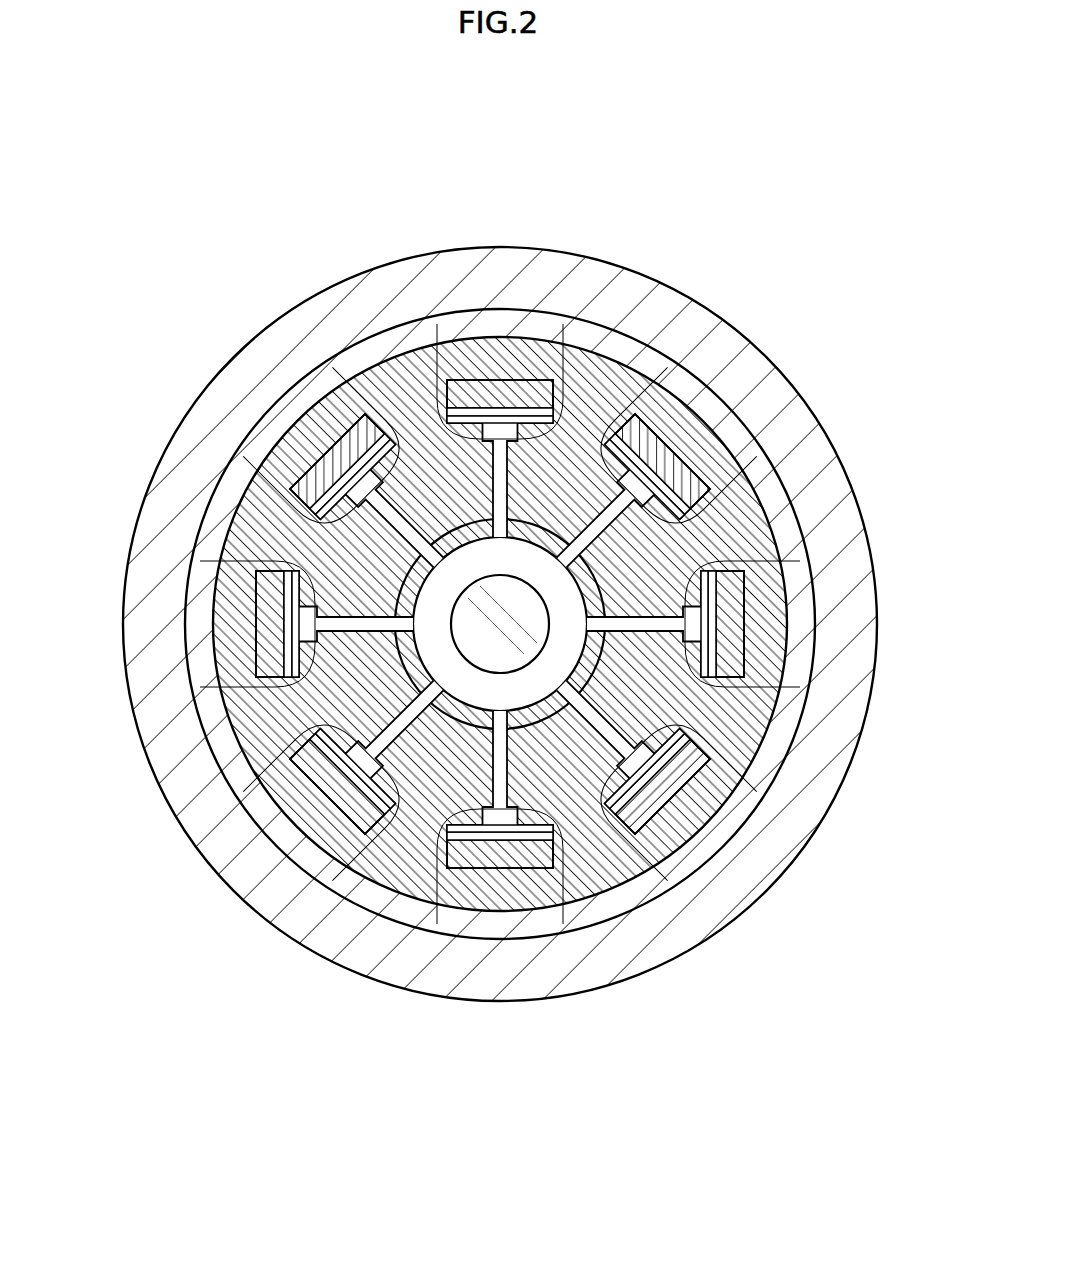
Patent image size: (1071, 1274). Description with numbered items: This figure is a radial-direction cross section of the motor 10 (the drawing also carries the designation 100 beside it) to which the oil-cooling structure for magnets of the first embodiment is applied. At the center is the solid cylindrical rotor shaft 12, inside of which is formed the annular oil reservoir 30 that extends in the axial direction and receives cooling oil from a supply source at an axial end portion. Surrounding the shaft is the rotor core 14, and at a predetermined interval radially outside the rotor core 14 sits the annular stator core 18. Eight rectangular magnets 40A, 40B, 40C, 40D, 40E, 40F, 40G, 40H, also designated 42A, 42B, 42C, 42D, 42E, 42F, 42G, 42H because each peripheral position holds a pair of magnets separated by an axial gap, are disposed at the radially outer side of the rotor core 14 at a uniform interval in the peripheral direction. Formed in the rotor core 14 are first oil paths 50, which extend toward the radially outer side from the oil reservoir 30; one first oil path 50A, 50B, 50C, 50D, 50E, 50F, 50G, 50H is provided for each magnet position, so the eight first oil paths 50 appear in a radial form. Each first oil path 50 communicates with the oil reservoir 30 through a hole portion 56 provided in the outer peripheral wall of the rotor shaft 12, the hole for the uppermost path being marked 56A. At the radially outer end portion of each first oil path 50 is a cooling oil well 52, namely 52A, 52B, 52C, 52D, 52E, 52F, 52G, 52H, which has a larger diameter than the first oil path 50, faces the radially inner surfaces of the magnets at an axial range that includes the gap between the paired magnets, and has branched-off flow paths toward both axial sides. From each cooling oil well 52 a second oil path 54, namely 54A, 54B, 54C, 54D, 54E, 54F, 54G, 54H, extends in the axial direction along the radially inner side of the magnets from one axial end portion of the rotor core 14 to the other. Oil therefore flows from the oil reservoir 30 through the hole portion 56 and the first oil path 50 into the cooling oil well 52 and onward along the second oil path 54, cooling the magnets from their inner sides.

The motor 10 is at (497, 635).
The vehicle drive device 100 is at (497, 635).
The rotor shaft 12 is at (596, 589).
The rotor core 14 is at (223, 541).
The stator core 18 is at (163, 440).
The oil reservoir 30 is at (460, 626).
The magnet 40A is at (552, 364).
The magnet 40B is at (721, 433).
The magnet 40C is at (762, 645).
The magnet 40D is at (683, 853).
The magnet 40E is at (460, 908).
The magnet 40F is at (276, 809).
The magnet 40G is at (235, 594).
The magnet 40H is at (328, 399).
The magnet 42A is at (552, 364).
The magnet 42B is at (721, 433).
The magnet 42C is at (762, 645).
The magnet 42D is at (683, 853).
The magnet 42E is at (460, 908).
The magnet 42F is at (276, 809).
The magnet 42G is at (235, 594).
The magnet 42H is at (328, 399).
The first oil path 50 is at (437, 324).
The first oil path 50A is at (479, 293).
The first oil path 50B is at (668, 367).
The first oil path 50C is at (800, 561).
The first oil path 50D is at (757, 792).
The first oil path 50E is at (563, 924).
The first oil path 50F is at (332, 881).
The first oil path 50G is at (200, 687).
The first oil path 50H is at (243, 456).
The cooling oil well 52 is at (503, 369).
The cooling oil well 52A is at (573, 309).
The cooling oil well 52B is at (690, 512).
The cooling oil well 52C is at (710, 680).
The cooling oil well 52D is at (612, 812).
The cooling oil well 52E is at (447, 835).
The cooling oil well 52F is at (312, 732).
The cooling oil well 52G is at (290, 570).
The cooling oil well 52H is at (317, 441).
The second oil path 54 is at (563, 324).
The second oil path 54A is at (537, 297).
The second oil path 54B is at (757, 456).
The second oil path 54C is at (800, 687).
The second oil path 54D is at (668, 881).
The second oil path 54E is at (437, 924).
The second oil path 54F is at (243, 792).
The second oil path 54G is at (200, 561).
The second oil path 54H is at (332, 367).
The hole portion 56 is at (497, 528).
The hole portion 56A is at (500, 479).